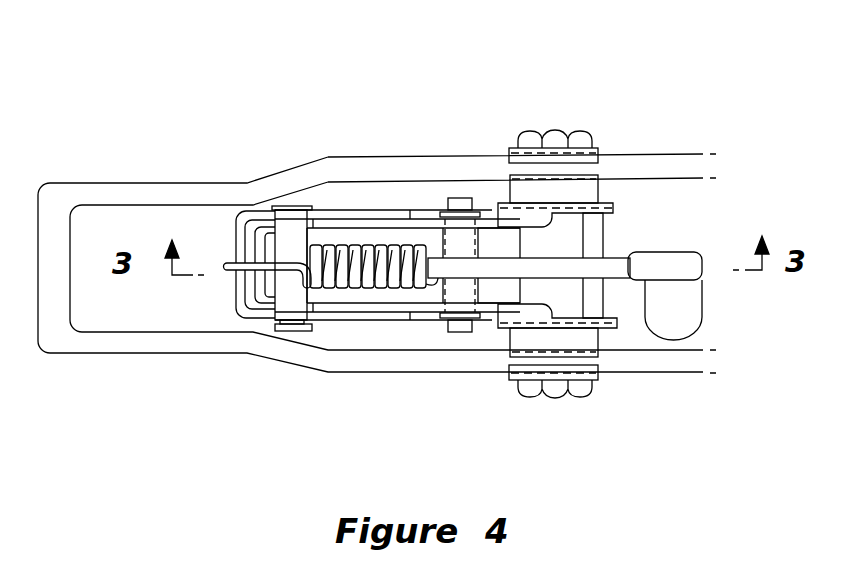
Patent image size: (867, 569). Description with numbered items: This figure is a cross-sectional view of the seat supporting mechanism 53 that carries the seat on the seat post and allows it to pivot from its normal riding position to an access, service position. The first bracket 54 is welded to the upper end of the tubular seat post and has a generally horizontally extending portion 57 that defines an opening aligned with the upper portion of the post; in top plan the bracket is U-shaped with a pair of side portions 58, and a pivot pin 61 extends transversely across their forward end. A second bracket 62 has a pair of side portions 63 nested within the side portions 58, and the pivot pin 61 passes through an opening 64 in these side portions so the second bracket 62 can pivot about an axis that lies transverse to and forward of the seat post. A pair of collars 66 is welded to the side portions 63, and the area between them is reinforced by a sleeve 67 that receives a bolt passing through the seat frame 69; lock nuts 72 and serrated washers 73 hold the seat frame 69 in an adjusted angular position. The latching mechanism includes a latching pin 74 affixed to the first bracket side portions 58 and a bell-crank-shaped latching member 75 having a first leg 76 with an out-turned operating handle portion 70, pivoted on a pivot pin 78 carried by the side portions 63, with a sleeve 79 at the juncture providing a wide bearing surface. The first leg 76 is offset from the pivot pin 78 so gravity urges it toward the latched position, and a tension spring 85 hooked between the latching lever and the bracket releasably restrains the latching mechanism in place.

The seat supporting mechanism 53 is at (688, 413).
The first bracket 54 is at (362, 209).
The horizontally extending portion 57 is at (400, 296).
The side portions 58 is at (340, 215).
The pivot pin 61 is at (287, 250).
The second bracket 62 is at (430, 318).
The side portions 63 is at (305, 220).
The opening 64 is at (290, 213).
The collars 66 is at (598, 190).
The sleeve 67 is at (573, 298).
The seat frame 69 is at (680, 156).
The operating handle portion 70 is at (690, 315).
The lock nuts 72 is at (565, 130).
The serrated washers 73 is at (598, 150).
The latching pin 74 is at (458, 203).
The latching member 75 is at (562, 254).
The first leg 76 is at (620, 268).
The pivot pin 78 is at (465, 245).
The sleeve 79 is at (485, 222).
The tension spring 85 is at (383, 243).